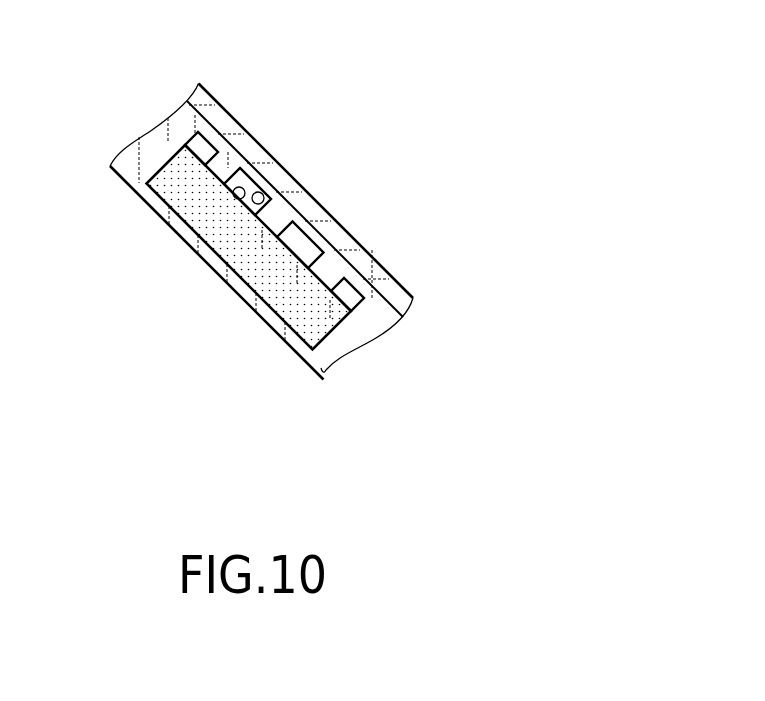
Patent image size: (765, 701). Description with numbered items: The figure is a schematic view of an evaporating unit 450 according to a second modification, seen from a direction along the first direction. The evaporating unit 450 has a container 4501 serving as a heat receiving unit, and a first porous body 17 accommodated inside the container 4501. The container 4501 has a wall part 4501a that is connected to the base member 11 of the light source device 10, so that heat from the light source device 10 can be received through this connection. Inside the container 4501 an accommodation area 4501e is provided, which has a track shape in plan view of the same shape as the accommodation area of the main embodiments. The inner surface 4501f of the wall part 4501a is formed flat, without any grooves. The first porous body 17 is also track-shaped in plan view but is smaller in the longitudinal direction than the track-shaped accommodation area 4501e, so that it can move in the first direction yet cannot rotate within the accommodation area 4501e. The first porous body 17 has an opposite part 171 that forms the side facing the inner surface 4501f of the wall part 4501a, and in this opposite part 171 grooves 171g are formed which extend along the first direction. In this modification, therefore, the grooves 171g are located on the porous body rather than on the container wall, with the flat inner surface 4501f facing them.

The evaporating unit 450 is at (86, 80).
The base member 11 is at (367, 272).
The light source device 10 is at (291, 232).
The first porous body 17 is at (262, 300).
The container 4501 is at (322, 372).
The wall part 4501a is at (235, 163).
The inner surface 4501f is at (266, 195).
The accommodation area 4501e is at (331, 325).
The grooves 171g is at (242, 202).
The opposite part 171 is at (209, 268).